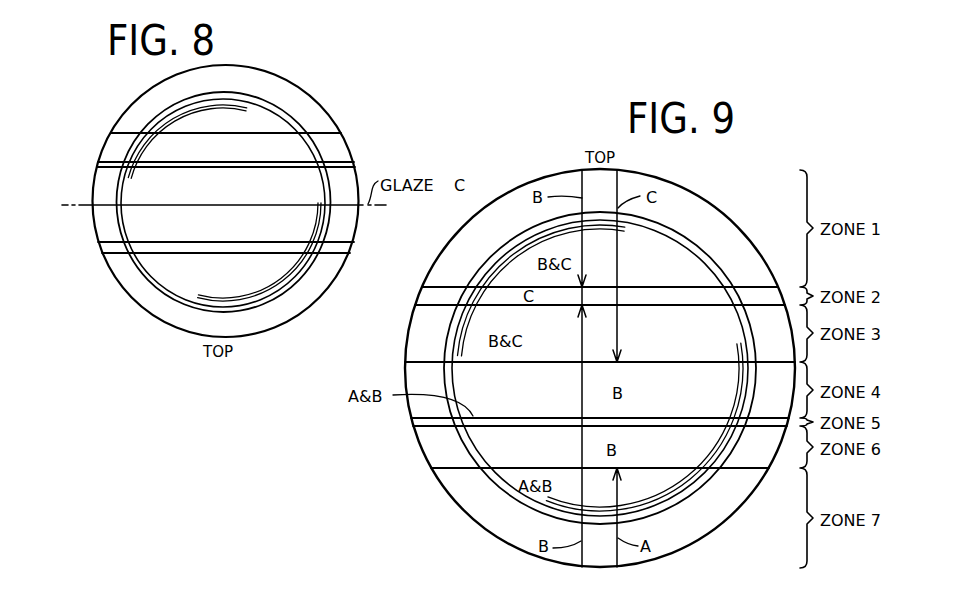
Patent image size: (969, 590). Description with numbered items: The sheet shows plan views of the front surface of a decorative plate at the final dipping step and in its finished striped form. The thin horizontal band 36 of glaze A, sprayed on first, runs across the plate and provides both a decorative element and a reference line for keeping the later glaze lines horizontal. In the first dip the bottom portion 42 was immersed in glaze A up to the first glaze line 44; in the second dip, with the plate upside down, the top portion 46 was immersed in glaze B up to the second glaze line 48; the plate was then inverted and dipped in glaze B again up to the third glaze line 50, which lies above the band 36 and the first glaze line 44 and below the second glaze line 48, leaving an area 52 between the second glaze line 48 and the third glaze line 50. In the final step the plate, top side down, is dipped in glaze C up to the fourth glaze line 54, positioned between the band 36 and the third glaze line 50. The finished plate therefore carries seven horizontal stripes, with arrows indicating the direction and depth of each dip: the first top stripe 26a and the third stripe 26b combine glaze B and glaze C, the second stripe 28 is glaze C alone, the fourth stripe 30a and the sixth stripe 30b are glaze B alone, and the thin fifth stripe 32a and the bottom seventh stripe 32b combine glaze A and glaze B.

In FIG. 8, the bottom portion 42 is at (289, 96).
In FIG. 8, the first glaze line 44 is at (313, 133).
In FIG. 9, the first glaze line 44 is at (450, 468).
In FIG. 8, the thin horizontal band 36 is at (328, 165).
In FIG. 8, the fourth glaze line 54 is at (103, 200).
In FIG. 9, the fourth glaze line 54 is at (418, 362).
In FIG. 8, the area between second and third glaze lines 52 is at (117, 247).
In FIG. 8, the third glaze line 50 is at (333, 242).
In FIG. 9, the third glaze line 50 is at (427, 305).
In FIG. 8, the second glaze line 48 is at (327, 257).
In FIG. 9, the second glaze line 48 is at (440, 287).
In FIG. 8, the top portion 46 is at (288, 305).
In FIG. 9, the first top stripe 26a is at (684, 272).
In FIG. 9, the second stripe 28 is at (635, 238).
In FIG. 9, the third stripe 26b is at (702, 350).
In FIG. 9, the fourth stripe 30a is at (700, 402).
In FIG. 9, the sixth stripe 30b is at (692, 458).
In FIG. 9, the fifth stripe 32a is at (443, 422).
In FIG. 9, the seventh stripe 32b is at (642, 517).